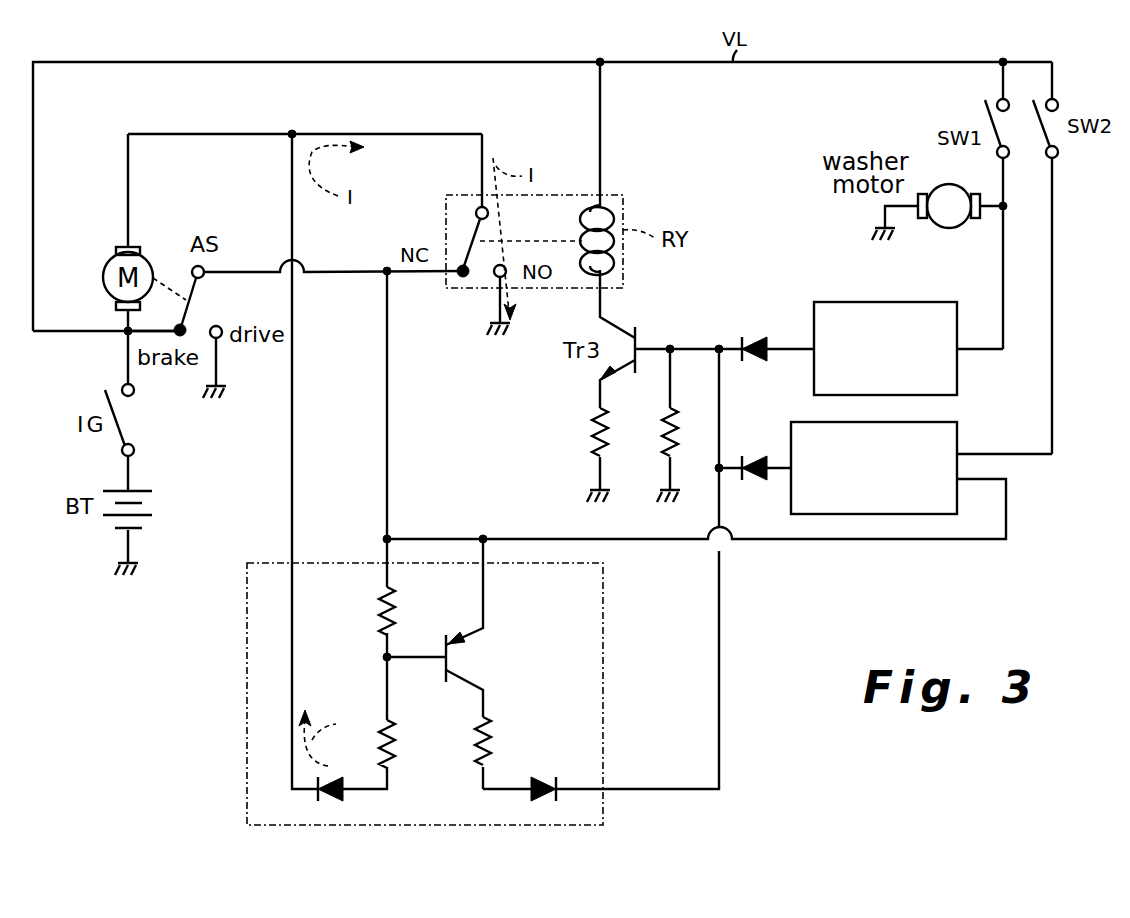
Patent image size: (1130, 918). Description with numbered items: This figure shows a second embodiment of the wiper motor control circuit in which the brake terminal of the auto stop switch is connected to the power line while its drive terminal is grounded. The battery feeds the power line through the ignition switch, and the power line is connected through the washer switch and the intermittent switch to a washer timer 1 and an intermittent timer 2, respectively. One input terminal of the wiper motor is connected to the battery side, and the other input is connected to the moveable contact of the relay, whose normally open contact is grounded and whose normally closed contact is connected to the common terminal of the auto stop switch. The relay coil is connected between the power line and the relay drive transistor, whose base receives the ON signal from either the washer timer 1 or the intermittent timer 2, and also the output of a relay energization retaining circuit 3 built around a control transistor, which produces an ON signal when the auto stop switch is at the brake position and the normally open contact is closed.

The washer timer 1 is at (898, 302).
The intermittent timer 2 is at (957, 440).
The relay energization retaining circuit 3 is at (247, 698).